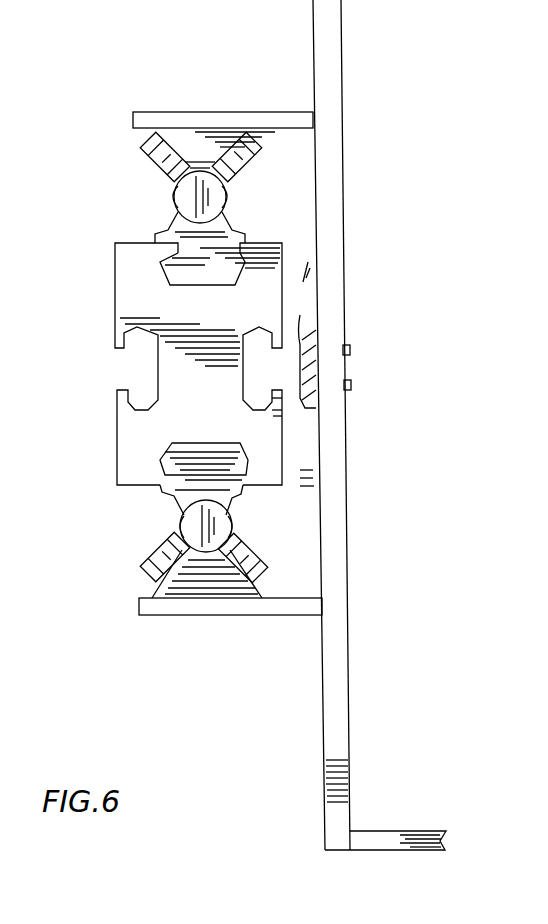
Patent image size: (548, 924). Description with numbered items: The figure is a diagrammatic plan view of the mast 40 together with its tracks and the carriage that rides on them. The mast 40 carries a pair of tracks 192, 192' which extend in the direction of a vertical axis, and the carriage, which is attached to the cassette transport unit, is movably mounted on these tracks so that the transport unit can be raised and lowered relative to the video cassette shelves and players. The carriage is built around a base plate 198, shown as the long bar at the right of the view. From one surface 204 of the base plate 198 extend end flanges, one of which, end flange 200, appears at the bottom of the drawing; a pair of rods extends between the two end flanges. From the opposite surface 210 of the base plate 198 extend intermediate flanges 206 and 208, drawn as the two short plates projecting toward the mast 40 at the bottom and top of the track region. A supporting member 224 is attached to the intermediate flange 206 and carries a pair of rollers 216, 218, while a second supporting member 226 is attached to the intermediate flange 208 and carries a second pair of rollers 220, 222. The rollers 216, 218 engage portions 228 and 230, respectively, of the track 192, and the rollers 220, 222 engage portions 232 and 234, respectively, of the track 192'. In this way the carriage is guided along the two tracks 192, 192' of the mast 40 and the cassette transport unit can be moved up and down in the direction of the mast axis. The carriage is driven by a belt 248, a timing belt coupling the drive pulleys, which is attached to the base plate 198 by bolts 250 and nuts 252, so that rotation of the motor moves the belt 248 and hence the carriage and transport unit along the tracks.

The mast 40 is at (117, 427).
The track 192 is at (145, 497).
The track 192' is at (131, 230).
The base plate 198 is at (318, 48).
The end flange 200 is at (382, 832).
The surface 204 is at (352, 656).
The intermediate flange 206 is at (233, 615).
The intermediate flange 208 is at (243, 110).
The opposite surface 210 is at (321, 493).
The roller 216 is at (152, 565).
The roller 218 is at (262, 558).
The roller 220 is at (155, 172).
The roller 222 is at (240, 173).
The supporting member 224 is at (178, 598).
The supporting member 226 is at (172, 142).
The portion of track 228 is at (188, 523).
The portion of track 230 is at (225, 528).
The portion of track 232 is at (183, 192).
The portion of track 234 is at (237, 208).
The belt 248 is at (300, 315).
The bolt 250 is at (300, 358).
The nut 252 is at (351, 386).